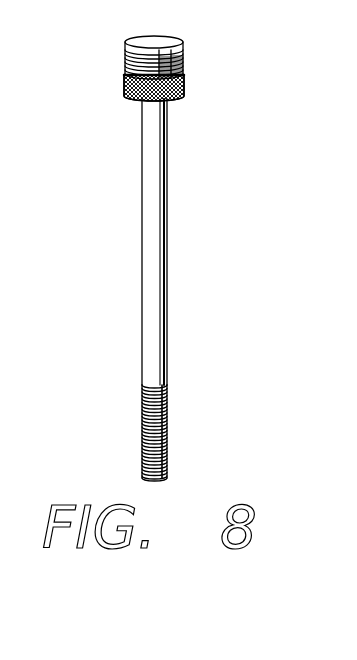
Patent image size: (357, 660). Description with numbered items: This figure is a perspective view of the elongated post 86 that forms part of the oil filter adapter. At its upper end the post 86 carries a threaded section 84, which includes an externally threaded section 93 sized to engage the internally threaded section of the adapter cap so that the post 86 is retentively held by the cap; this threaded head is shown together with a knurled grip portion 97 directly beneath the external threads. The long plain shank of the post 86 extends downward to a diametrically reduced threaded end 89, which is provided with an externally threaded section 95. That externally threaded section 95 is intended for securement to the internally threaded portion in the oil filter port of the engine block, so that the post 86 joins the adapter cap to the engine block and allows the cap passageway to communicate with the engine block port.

The threaded section 84 is at (172, 68).
The externally threaded section 93 is at (127, 54).
The knurled grip portion 97 is at (126, 83).
The post 86 is at (166, 200).
The diametrically reduced threaded end 89 is at (193, 417).
The externally threaded section 95 is at (170, 380).